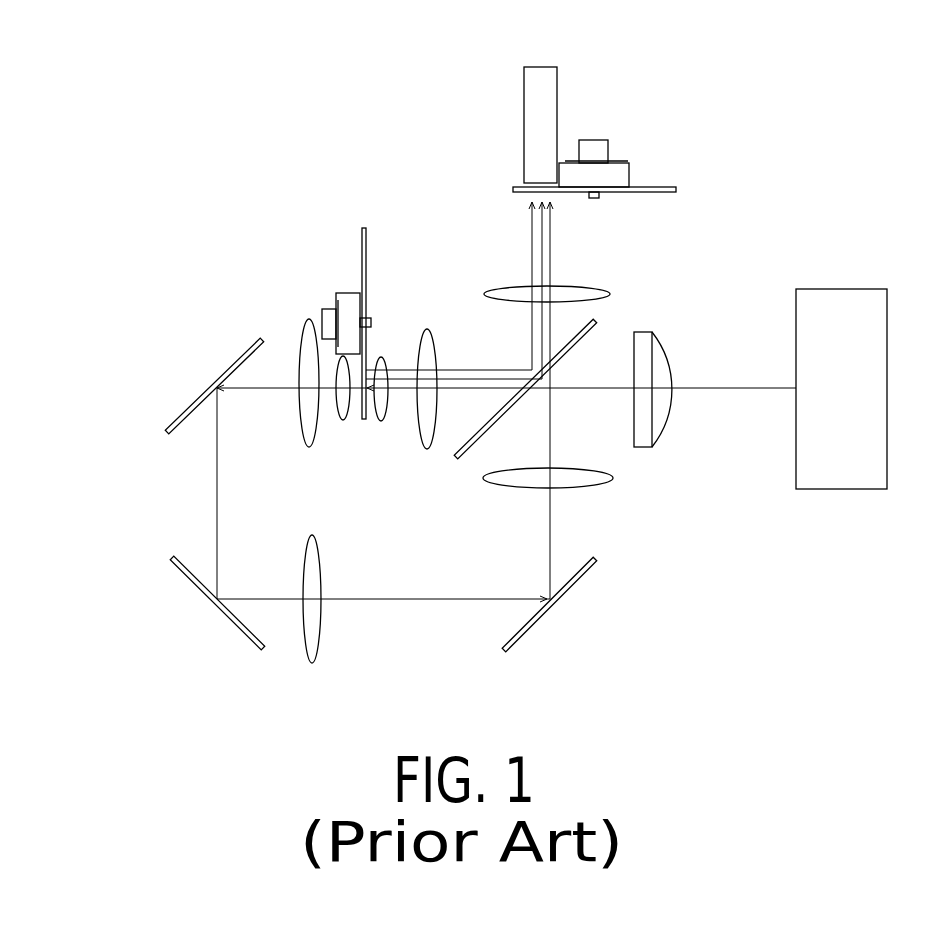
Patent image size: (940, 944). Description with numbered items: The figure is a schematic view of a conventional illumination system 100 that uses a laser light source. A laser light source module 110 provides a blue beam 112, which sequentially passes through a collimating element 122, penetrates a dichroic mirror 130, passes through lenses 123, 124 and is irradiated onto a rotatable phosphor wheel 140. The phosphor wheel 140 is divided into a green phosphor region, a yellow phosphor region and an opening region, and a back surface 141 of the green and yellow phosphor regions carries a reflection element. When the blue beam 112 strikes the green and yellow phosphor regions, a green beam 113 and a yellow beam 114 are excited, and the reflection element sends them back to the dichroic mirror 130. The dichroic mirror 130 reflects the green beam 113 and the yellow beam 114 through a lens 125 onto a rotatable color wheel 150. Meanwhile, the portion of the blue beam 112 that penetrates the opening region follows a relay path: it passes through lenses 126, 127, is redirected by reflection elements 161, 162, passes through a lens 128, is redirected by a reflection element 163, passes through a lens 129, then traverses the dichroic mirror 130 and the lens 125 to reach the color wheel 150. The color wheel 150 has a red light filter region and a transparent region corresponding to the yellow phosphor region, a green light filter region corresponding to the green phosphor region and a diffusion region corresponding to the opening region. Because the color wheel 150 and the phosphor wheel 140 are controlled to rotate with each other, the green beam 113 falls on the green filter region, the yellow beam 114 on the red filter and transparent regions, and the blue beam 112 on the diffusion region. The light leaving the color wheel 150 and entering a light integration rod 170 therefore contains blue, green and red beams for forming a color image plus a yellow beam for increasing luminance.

The illumination system 100 is at (163, 62).
The laser light source module 110 is at (871, 388).
The blue beam 112 is at (262, 392).
The green beam 113 is at (465, 370).
The yellow beam 114 is at (490, 370).
The collimating element 122 is at (647, 437).
The lens 123 is at (425, 343).
The lens 124 is at (380, 413).
The lens 125 is at (594, 295).
The lens 126 is at (336, 378).
The lens 127 is at (306, 360).
The lens 128 is at (313, 627).
The lens 129 is at (508, 481).
The dichroic mirror 130 is at (597, 325).
The phosphor wheel 140 is at (365, 228).
The back surface 141 is at (362, 267).
The color wheel 150 is at (677, 191).
The reflection element 161 is at (182, 411).
The reflection element 162 is at (192, 587).
The reflection element 163 is at (573, 587).
The light integration rod 170 is at (547, 93).